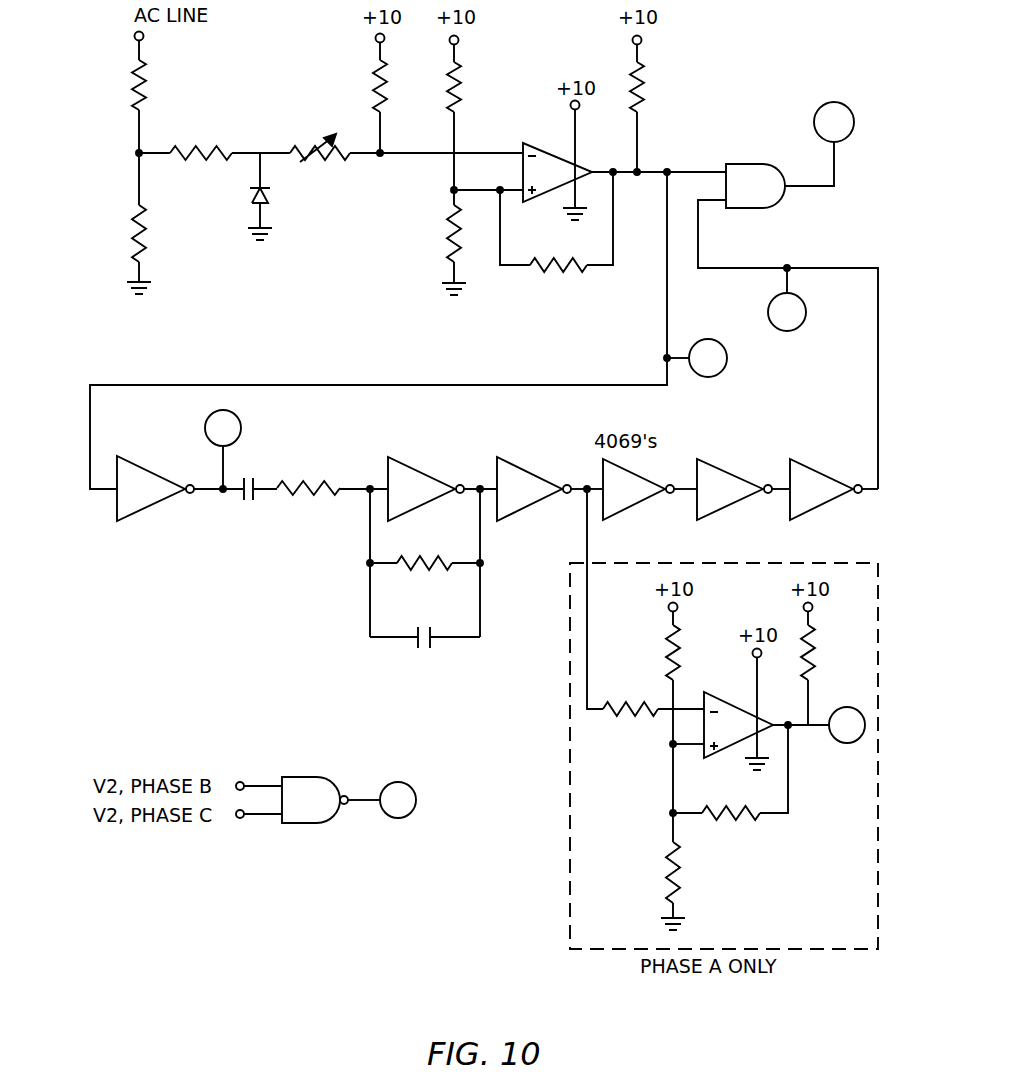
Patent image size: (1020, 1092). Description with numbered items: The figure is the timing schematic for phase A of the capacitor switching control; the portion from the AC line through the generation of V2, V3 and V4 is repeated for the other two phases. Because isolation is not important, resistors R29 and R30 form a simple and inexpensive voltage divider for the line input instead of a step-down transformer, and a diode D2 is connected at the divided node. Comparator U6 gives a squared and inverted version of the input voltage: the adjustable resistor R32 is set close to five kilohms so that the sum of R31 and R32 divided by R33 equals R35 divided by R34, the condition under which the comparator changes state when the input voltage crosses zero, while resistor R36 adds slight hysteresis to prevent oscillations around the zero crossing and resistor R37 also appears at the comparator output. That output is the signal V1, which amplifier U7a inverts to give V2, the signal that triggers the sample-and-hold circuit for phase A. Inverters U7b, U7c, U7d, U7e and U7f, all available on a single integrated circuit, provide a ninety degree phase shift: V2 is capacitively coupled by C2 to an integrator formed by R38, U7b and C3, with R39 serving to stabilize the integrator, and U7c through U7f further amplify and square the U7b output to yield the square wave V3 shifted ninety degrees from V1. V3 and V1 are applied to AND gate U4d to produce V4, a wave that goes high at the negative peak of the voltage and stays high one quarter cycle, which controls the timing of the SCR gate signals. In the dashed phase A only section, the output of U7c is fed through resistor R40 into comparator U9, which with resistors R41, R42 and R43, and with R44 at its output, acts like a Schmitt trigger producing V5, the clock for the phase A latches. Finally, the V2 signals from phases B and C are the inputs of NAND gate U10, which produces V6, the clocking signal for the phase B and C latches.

The resistor R29 is at (162, 86).
The resistor R30 is at (162, 233).
The resistor R31 is at (201, 178).
The adjustable resistor R32 is at (320, 172).
The resistor R33 is at (350, 94).
The resistor R34 is at (482, 121).
The resistor R35 is at (429, 250).
The resistor R36 is at (556, 246).
The resistor 3k R37 is at (659, 104).
The resistor R38 is at (332, 464).
The resistor R39 is at (425, 590).
The resistor 33k R40 is at (653, 734).
The resistor R41 is at (646, 723).
The resistor R42 is at (646, 886).
The resistor R43 is at (730, 800).
The resistor 3k R44 is at (829, 664).
The diode D2 is at (247, 196).
The capacitor C2 is at (265, 514).
The capacitor C3 is at (425, 662).
The comparator U6 is at (556, 158).
The AND gate U4d is at (788, 326).
The amplifier U7a is at (155, 497).
The inverter U7b is at (442, 489).
The inverter U7c is at (550, 489).
The inverter U7d is at (650, 489).
The inverter U7e is at (743, 489).
The inverter U7f is at (834, 489).
The comparator U9 is at (738, 710).
The NAND gate U10 is at (331, 800).
The output signal V1 is at (697, 358).
The timing signal V2 is at (223, 449).
The square wave V3 is at (787, 299).
The timing wave V4 is at (819, 144).
The clock waveform V5 is at (847, 725).
The clocking signal V6 is at (398, 800).